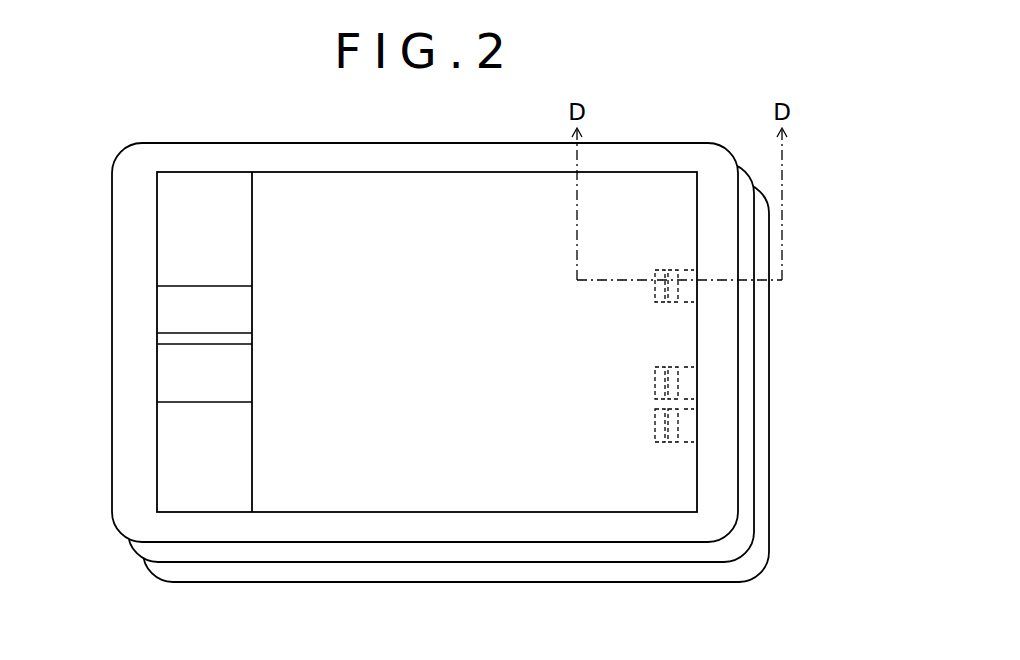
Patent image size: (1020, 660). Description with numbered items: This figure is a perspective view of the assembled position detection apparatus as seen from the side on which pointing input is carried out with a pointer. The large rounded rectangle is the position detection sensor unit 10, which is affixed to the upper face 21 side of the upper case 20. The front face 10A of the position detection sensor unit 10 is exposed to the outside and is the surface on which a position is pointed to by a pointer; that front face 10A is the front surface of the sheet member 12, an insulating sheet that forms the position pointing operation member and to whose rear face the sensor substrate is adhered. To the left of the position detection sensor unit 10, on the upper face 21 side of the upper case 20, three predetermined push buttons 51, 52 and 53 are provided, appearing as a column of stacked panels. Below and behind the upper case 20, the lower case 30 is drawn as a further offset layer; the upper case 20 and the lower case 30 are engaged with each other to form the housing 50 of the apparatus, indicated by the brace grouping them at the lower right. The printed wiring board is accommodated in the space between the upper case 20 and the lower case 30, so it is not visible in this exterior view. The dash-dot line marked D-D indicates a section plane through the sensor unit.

The position detection sensor unit 10 is at (509, 172).
The front face 10A is at (362, 195).
The sheet member 12 is at (289, 195).
The upper case 20 is at (752, 622).
The upper face 21 is at (137, 439).
The lower case 30 is at (717, 568).
The housing 50 is at (448, 411).
The push button 51 is at (195, 240).
The push button 52 is at (195, 381).
The push button 53 is at (195, 491).